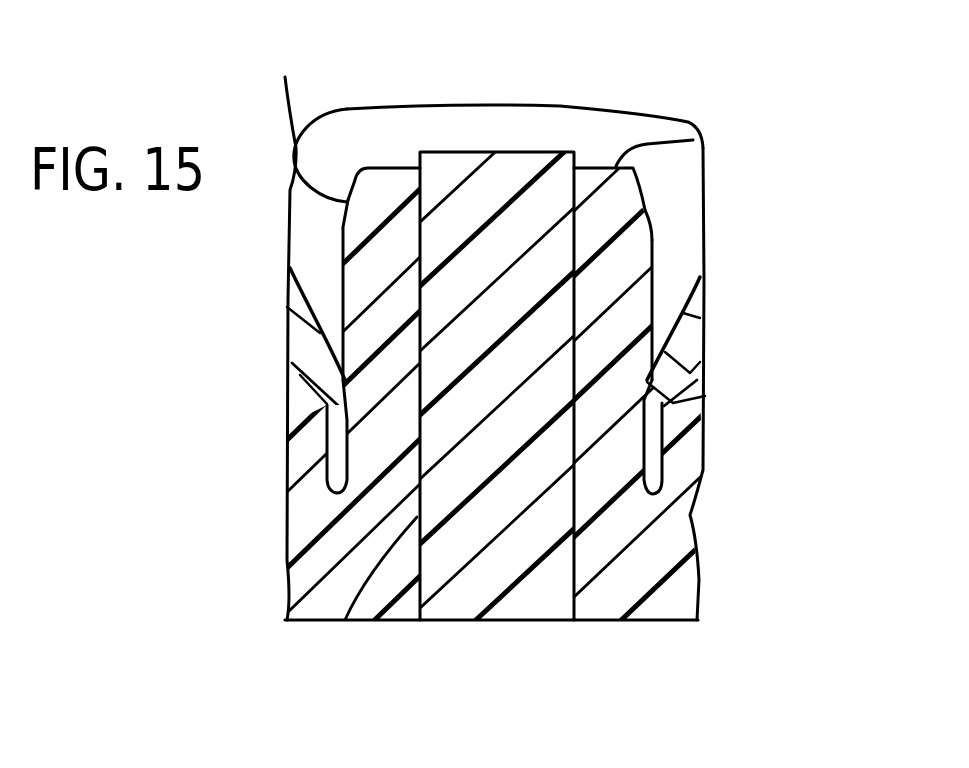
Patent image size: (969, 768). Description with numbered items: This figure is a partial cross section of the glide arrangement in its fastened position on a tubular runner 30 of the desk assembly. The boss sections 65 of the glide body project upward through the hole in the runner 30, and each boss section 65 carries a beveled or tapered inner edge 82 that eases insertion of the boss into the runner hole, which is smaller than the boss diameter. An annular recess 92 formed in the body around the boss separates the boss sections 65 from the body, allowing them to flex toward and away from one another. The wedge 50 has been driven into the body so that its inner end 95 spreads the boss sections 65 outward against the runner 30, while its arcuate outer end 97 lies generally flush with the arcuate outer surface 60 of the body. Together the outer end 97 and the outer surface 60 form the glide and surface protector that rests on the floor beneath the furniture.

The runner 30 is at (325, 385).
The wedge 50 is at (347, 622).
The outer surface 60 is at (663, 623).
The boss section 65 is at (348, 112).
The tapered inner edge 82 is at (742, 160).
The annular recess 92 is at (340, 460).
The inner end 95 is at (510, 152).
The outer end 97 is at (505, 622).